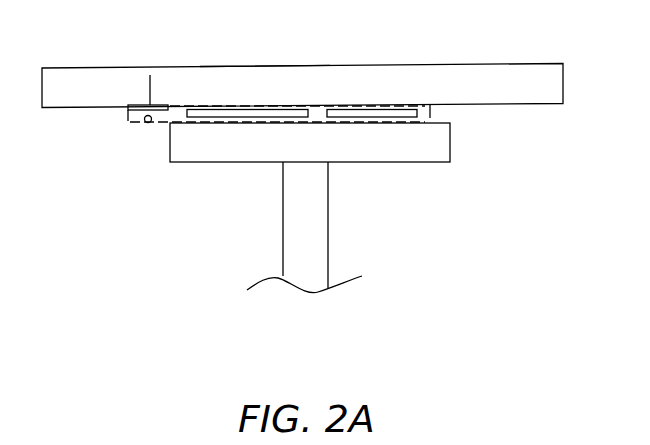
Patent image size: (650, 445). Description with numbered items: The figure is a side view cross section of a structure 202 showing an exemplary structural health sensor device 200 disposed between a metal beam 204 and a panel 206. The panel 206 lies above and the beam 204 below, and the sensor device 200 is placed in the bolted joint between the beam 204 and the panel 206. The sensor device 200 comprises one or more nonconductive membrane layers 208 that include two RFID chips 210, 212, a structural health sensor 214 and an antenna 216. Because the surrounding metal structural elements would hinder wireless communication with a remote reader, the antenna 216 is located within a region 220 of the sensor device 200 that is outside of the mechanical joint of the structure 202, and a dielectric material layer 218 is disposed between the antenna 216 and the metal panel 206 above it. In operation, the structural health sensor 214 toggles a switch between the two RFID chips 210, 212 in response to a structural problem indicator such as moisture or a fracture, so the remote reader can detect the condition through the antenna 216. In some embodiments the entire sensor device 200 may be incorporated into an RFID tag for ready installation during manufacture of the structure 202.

The structural health sensor device 200 is at (456, 117).
The structure 202 is at (530, 40).
The metal beam 204 is at (207, 163).
The panel 206 is at (262, 65).
The nonconductive membrane layer 208 is at (128, 120).
The RFID chip 210 is at (362, 170).
The RFID chip 212 is at (372, 112).
The structural health sensor 214 is at (246, 112).
The antenna 216 is at (146, 122).
The dielectric material layer 218 is at (150, 75).
The region 220 is at (140, 164).